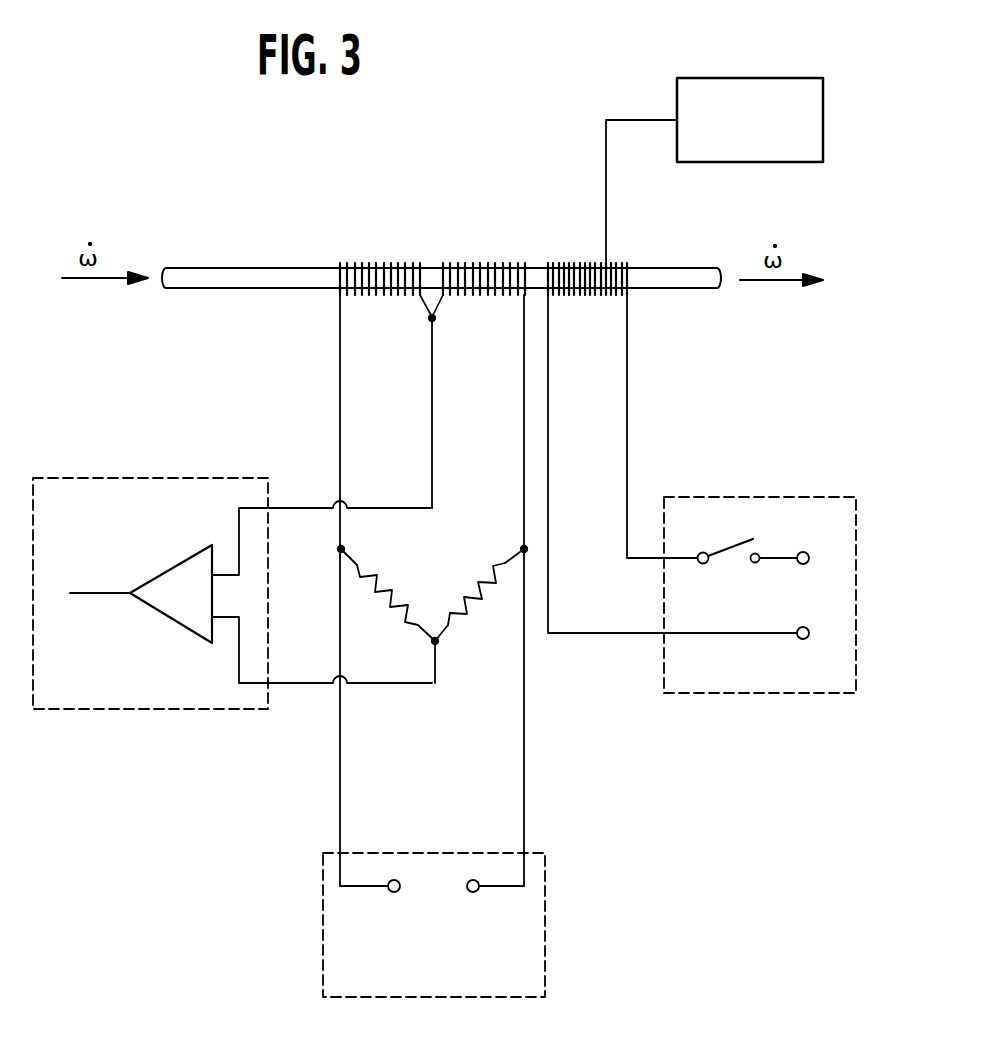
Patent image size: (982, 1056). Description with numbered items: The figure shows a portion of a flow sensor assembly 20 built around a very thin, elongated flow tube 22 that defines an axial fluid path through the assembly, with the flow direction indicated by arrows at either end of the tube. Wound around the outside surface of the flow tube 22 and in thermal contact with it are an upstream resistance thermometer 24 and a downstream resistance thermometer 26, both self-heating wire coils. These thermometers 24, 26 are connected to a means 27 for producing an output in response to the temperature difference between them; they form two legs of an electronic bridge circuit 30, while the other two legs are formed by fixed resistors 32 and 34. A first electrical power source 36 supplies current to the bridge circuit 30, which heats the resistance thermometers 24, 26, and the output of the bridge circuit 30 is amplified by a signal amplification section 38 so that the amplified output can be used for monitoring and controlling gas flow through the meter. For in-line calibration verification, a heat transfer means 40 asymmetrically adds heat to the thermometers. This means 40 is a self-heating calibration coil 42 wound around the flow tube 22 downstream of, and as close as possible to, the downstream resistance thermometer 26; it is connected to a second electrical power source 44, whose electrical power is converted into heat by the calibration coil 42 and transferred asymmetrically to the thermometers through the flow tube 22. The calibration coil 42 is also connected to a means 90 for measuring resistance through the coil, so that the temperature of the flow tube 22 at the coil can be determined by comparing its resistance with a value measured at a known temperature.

The flow sensor assembly 20 is at (338, 238).
The flow tube 22 is at (233, 270).
The upstream resistance thermometer 24 is at (380, 270).
The downstream resistance thermometer 26 is at (482, 270).
The means for producing an output 27 is at (293, 883).
The electronic bridge circuit 30 is at (433, 657).
The fixed resistor 32 is at (479, 610).
The fixed resistor 34 is at (402, 626).
The first electrical power source 36 is at (545, 955).
The signal amplification section 38 is at (103, 709).
The heat transfer means 40 is at (767, 467).
The calibration coil 42 is at (627, 280).
The second electrical power source 44 is at (733, 693).
The means for measuring resistance 90 is at (738, 170).